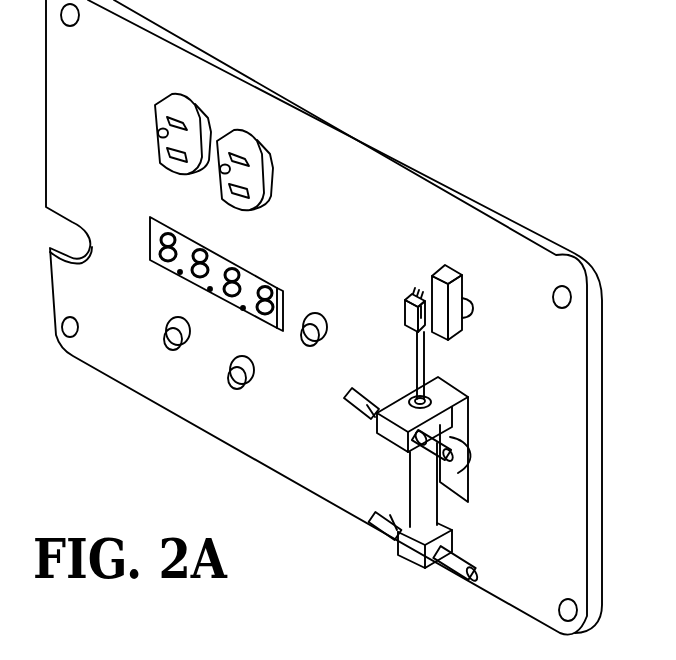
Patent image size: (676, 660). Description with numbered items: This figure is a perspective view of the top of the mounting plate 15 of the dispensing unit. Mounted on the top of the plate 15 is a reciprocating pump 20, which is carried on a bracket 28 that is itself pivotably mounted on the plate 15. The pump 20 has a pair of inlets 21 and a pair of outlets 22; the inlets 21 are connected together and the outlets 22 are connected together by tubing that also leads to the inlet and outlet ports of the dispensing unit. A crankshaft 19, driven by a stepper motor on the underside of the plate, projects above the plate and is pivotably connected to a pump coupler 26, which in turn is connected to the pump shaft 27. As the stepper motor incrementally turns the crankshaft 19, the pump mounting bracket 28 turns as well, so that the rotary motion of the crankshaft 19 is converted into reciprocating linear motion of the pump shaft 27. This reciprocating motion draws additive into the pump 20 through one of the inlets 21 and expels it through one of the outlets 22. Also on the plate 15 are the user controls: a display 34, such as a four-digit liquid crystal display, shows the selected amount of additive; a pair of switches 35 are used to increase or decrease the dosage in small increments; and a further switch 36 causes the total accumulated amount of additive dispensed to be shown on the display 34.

The plate 15 is at (528, 232).
The crankshaft 19 is at (455, 292).
The reciprocating pump 20 is at (425, 510).
The inlets 21 is at (374, 520).
The outlets 22 is at (460, 476).
The pump coupler 26 is at (405, 299).
The pump shaft 27 is at (430, 361).
The bracket 28 is at (470, 428).
The display 34 is at (152, 226).
The switches 35 is at (230, 381).
The switch 36 is at (313, 318).